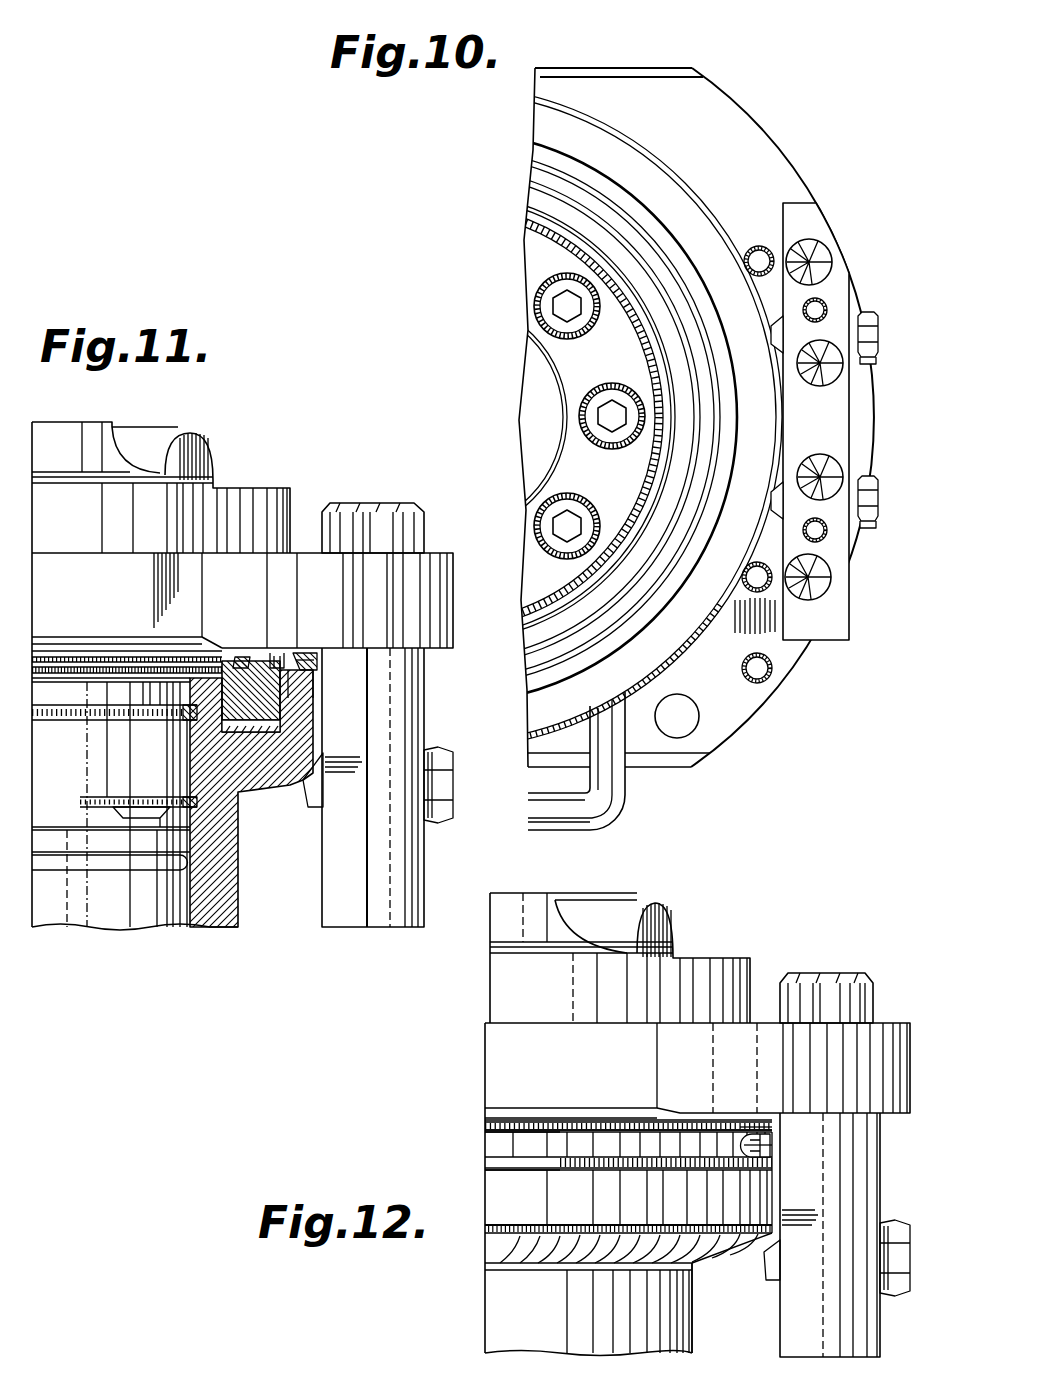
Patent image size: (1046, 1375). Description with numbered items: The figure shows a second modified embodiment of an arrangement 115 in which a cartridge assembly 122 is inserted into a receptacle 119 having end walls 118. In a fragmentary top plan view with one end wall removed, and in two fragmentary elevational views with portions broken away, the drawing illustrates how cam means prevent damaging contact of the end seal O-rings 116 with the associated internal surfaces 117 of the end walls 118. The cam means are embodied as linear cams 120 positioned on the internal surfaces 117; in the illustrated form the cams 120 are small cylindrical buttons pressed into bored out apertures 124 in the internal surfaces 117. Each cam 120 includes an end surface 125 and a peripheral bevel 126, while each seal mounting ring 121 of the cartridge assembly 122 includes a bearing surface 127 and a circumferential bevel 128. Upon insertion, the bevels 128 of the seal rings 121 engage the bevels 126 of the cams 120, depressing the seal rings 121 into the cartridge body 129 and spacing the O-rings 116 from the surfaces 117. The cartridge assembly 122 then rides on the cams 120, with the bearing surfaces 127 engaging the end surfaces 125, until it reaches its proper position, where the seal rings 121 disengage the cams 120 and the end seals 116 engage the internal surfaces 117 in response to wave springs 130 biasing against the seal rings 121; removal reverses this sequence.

In FIG. 10, the arrangement 115 is at (689, 408).
In FIG. 11, the arrangement 115 is at (342, 449).
In FIG. 12, the arrangement 115 is at (430, 1060).
In FIG. 10, the end seal O-rings 116 is at (462, 402).
In FIG. 11, the end seal O-rings 116 is at (237, 627).
In FIG. 10, the internal surfaces 117 is at (665, 761).
In FIG. 11, the internal surfaces 117 is at (127, 626).
In FIG. 12, the internal surfaces 117 is at (489, 1144).
In FIG. 10, the end walls 118 is at (651, 734).
In FIG. 11, the end walls 118 is at (267, 600).
In FIG. 12, the end walls 118 is at (664, 1070).
In FIG. 10, the receptacle 119 is at (782, 408).
In FIG. 11, the receptacle 119 is at (378, 693).
In FIG. 12, the receptacle 119 is at (837, 1144).
In FIG. 10, the linear cams 120 is at (785, 427).
In FIG. 11, the linear cams 120 is at (326, 639).
In FIG. 12, the linear cams 120 is at (743, 1103).
In FIG. 10, the seal mounting rings 121 is at (451, 406).
In FIG. 11, the seal mounting rings 121 is at (251, 718).
In FIG. 12, the seal mounting rings 121 is at (522, 1179).
In FIG. 10, the cartridge assembly 122 is at (451, 389).
In FIG. 11, the cartridge assembly 122 is at (161, 701).
In FIG. 12, the cartridge assembly 122 is at (596, 1124).
In FIG. 10, the bored out apertures 124 is at (748, 233).
In FIG. 10, the end surface 125 is at (746, 624).
In FIG. 11, the end surface 125 is at (291, 742).
In FIG. 12, the end surface 125 is at (780, 1166).
In FIG. 10, the peripheral bevel 126 is at (831, 421).
In FIG. 11, the peripheral bevel 126 is at (330, 667).
In FIG. 12, the peripheral bevel 126 is at (779, 1142).
In FIG. 10, the bearing surface 127 is at (513, 417).
In FIG. 11, the bearing surface 127 is at (277, 636).
In FIG. 12, the bearing surface 127 is at (628, 1093).
In FIG. 10, the circumferential bevel 128 is at (510, 417).
In FIG. 11, the circumferential bevel 128 is at (324, 688).
In FIG. 12, the circumferential bevel 128 is at (628, 1089).
In FIG. 10, the cartridge body 129 is at (451, 405).
In FIG. 11, the cartridge body 129 is at (251, 798).
In FIG. 12, the cartridge body 129 is at (714, 1308).
In FIG. 11, the wave springs 130 is at (208, 740).